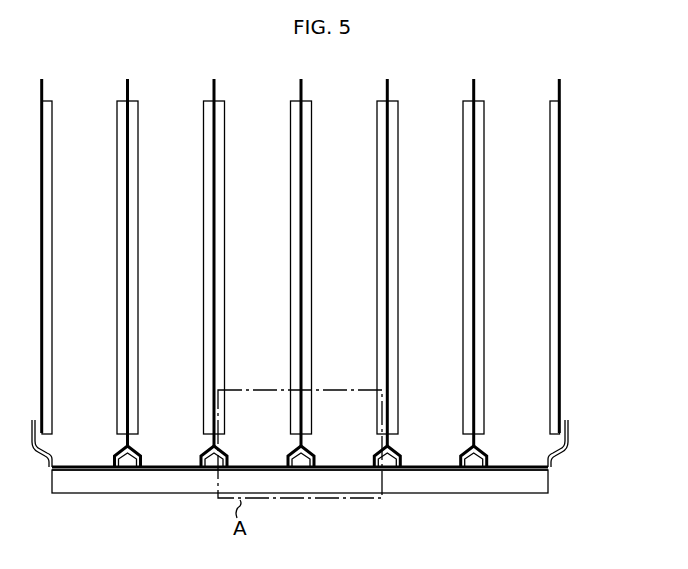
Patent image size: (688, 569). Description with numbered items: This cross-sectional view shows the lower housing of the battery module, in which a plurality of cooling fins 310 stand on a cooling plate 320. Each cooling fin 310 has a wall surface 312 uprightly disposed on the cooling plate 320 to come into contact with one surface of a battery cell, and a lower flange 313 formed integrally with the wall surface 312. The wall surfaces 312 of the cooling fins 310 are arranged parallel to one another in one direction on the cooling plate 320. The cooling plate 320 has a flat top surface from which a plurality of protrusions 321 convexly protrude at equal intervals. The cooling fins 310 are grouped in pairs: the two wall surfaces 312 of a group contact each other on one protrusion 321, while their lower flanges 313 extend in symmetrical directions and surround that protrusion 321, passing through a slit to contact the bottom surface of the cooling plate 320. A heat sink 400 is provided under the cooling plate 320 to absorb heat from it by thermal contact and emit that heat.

The cooling fin 310 is at (571, 160).
The wall surface 312 is at (303, 84).
The lower flange 313 is at (290, 451).
The cooling plate 320 is at (572, 451).
The protrusion 321 is at (299, 462).
The heat sink 400 is at (501, 497).